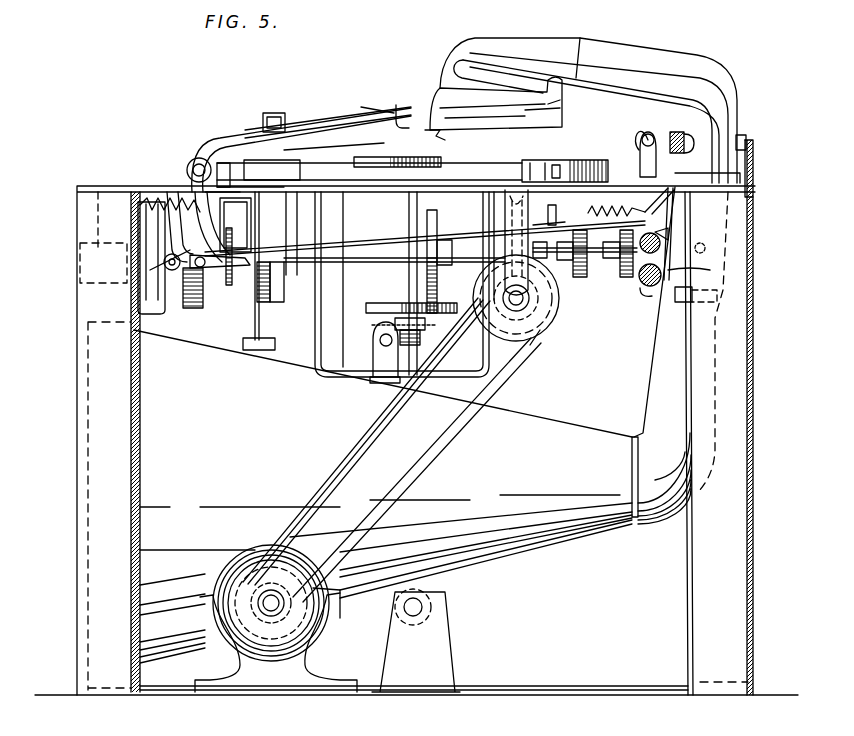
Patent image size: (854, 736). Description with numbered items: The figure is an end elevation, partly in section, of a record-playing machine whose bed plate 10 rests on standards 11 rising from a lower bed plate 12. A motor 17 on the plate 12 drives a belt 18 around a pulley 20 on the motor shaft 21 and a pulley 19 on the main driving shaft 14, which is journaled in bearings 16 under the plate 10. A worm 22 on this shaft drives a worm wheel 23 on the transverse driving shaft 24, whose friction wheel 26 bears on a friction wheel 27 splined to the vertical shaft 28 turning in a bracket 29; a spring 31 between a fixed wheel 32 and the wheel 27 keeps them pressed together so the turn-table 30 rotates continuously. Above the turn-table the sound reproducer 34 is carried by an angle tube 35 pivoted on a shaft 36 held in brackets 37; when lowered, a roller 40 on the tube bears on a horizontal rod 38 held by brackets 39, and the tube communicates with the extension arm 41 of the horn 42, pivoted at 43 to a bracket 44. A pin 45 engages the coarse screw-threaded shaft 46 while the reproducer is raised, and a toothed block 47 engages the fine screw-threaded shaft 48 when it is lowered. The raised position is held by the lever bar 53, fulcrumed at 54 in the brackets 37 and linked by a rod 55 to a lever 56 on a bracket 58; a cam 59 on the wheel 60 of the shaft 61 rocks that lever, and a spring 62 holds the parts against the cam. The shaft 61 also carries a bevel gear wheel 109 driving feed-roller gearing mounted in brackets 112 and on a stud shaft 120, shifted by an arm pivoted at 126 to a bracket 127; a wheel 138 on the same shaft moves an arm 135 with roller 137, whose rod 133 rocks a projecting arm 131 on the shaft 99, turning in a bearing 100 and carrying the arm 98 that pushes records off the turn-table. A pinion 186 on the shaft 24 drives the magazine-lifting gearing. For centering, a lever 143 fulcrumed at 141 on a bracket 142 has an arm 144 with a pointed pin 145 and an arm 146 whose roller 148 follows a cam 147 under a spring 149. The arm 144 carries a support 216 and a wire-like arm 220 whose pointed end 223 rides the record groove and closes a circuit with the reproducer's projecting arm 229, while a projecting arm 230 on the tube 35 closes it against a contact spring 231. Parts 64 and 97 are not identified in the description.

The bed plate 10 is at (128, 190).
The standards 11 is at (76, 438).
The lower bed plate 12 is at (526, 692).
The main driving shaft 14 is at (515, 308).
The bearings 16 is at (529, 220).
The motor 17 is at (246, 572).
The belt 18 is at (432, 465).
The pulley 19 is at (448, 320).
The pulley 20 is at (320, 630).
The motor shaft 21 is at (268, 603).
The worm 22 is at (540, 348).
The worm wheel 23 is at (500, 176).
The transverse driving shaft 24 is at (604, 260).
The friction wheel 26 is at (438, 286).
The friction wheel 27 is at (386, 308).
The vertical shaft 28 is at (410, 218).
The bracket 29 is at (478, 376).
The turn-table 30 is at (456, 172).
The spring 31 is at (394, 322).
The fixed wheel 32 is at (426, 345).
The sound reproducer 34 is at (428, 88).
The angle tube 35 is at (686, 58).
The shaft 36 is at (706, 250).
The brackets 37 is at (662, 224).
The horizontal rod 38 is at (640, 140).
The brackets 39 is at (640, 145).
The roller 40 is at (672, 134).
The extension arm 41 is at (718, 346).
The sound amplifying horn 42 is at (518, 556).
The pivot 43 is at (422, 606).
The bracket 44 is at (440, 640).
The pin 45 is at (668, 272).
The coarse screw-threaded shaft 46 is at (651, 294).
The block 47 is at (668, 238).
The fine screw-threaded shaft 48 is at (648, 255).
The lever bar 53 is at (660, 200).
The fulcrum 54 is at (638, 220).
The rod 55 is at (371, 243).
The lever 56 is at (210, 300).
The bracket 58 is at (235, 225).
The cam 59 is at (200, 310).
The wheel 60 is at (180, 310).
The shaft 61 is at (376, 262).
The spring 62 is at (538, 226).
The gear 64 is at (628, 280).
The ratchet 97 is at (578, 162).
The arm 98 is at (393, 140).
The shaft 99 is at (290, 364).
The bearing 100 is at (296, 236).
The bevel gear wheel 109 is at (232, 286).
The brackets 112 is at (456, 731).
The stud shaft 120 is at (411, 731).
The pivot 126 is at (351, 731).
The bracket 127 is at (306, 731).
The projecting arm 131 is at (262, 350).
The rod 133 is at (262, 338).
The arm 135 is at (258, 302).
The roller 137 is at (284, 284).
The wheel 138 is at (284, 298).
The fulcrum 141 is at (193, 165).
The bracket 142 is at (188, 174).
The lever 143 is at (205, 145).
The arm 144 is at (345, 125).
The pointed pin 145 is at (422, 128).
The arm 146 is at (212, 200).
The cam 147 is at (143, 230).
The roller 148 is at (150, 270).
The spring 149 is at (172, 205).
The pinion 186 is at (592, 278).
The support 216 is at (272, 113).
The wire-like arm 220 is at (310, 125).
The pointed end 223 is at (382, 144).
The projecting arm 229 is at (374, 112).
The projecting arm 230 is at (740, 136).
The contact spring 231 is at (750, 148).